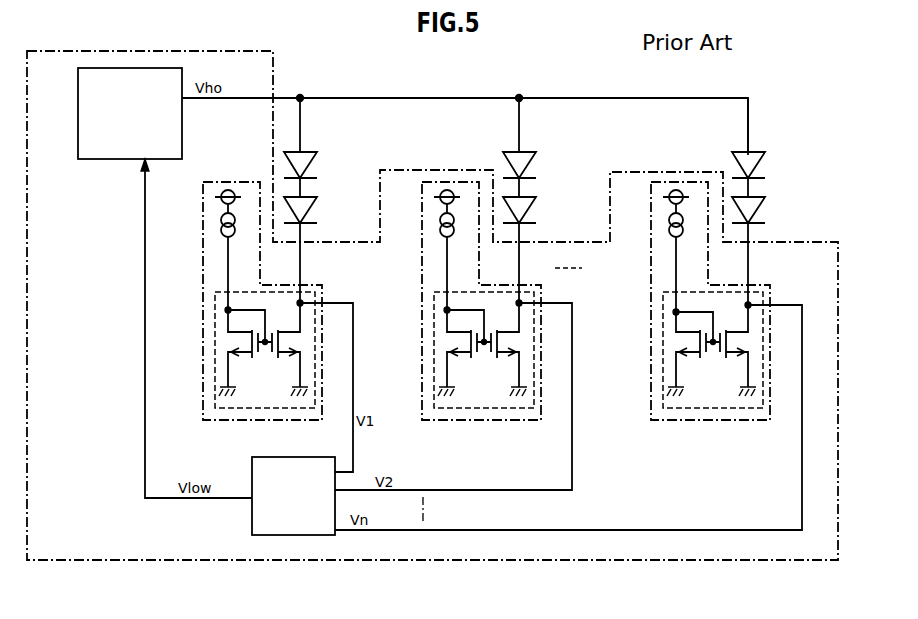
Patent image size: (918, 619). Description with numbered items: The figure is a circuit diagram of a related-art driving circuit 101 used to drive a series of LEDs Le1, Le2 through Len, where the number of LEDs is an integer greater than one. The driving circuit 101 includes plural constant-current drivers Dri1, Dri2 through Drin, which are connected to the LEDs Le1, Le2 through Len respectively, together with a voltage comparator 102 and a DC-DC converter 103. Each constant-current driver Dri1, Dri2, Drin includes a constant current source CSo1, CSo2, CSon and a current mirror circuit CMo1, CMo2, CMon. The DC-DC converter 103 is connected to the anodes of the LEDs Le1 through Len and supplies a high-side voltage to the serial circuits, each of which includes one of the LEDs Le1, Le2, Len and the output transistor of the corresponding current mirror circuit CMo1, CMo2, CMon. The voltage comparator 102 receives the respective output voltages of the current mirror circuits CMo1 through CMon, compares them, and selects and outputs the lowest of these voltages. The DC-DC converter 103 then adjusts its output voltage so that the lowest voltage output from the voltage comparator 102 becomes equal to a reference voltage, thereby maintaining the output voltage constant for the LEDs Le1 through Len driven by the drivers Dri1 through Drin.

The driving circuit 101 is at (716, 565).
The voltage comparator 102 is at (250, 522).
The DC-DC converter 103 is at (101, 161).
The LED Le1 is at (325, 150).
The LED Le2 is at (546, 199).
The LED Len is at (775, 201).
The constant-current driver Dri1 is at (236, 301).
The constant-current driver Dri2 is at (455, 301).
The constant-current driver Drin is at (681, 301).
The constant current source CSo1 is at (222, 232).
The constant current source CSo2 is at (415, 250).
The constant current source CSon is at (643, 250).
The current mirror circuit CMo1 is at (216, 320).
The current mirror circuit CMo2 is at (451, 350).
The current mirror circuit CMon is at (678, 350).